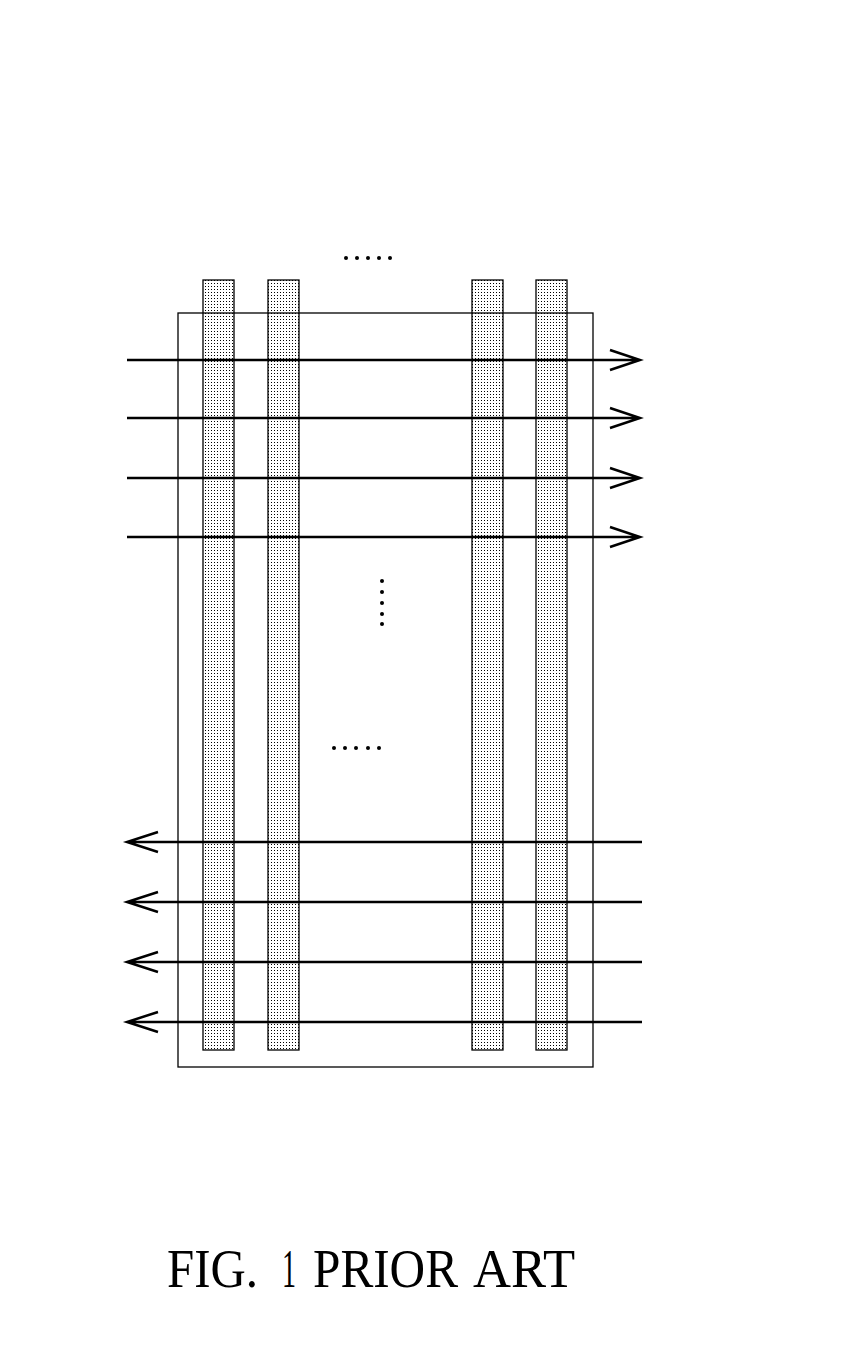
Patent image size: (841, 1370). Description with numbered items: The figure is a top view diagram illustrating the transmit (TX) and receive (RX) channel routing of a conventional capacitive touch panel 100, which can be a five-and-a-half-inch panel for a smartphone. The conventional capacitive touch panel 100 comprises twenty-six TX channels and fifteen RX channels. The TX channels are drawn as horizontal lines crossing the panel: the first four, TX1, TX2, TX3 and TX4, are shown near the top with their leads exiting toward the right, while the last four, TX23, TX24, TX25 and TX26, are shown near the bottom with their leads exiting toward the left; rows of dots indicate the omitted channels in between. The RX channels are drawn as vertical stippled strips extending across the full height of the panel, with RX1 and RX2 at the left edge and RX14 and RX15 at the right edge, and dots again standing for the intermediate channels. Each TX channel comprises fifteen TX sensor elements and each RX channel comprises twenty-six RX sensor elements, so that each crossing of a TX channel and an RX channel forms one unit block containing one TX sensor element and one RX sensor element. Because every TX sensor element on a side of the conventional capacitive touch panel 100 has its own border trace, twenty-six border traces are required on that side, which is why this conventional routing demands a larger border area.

The conventional capacitive touch panel 100 is at (592, 113).
The TX channel TX1 is at (336, 361).
The TX channel TX2 is at (336, 419).
The TX channel TX3 is at (336, 479).
The TX channel TX4 is at (336, 538).
The TX channel TX23 is at (430, 844).
The TX channel TX24 is at (430, 904).
The TX channel TX25 is at (430, 964).
The TX channel TX26 is at (430, 1024).
The RX channel RX1 is at (217, 645).
The RX channel RX2 is at (278, 645).
The RX channel RX14 is at (469, 645).
The RX channel RX15 is at (570, 645).